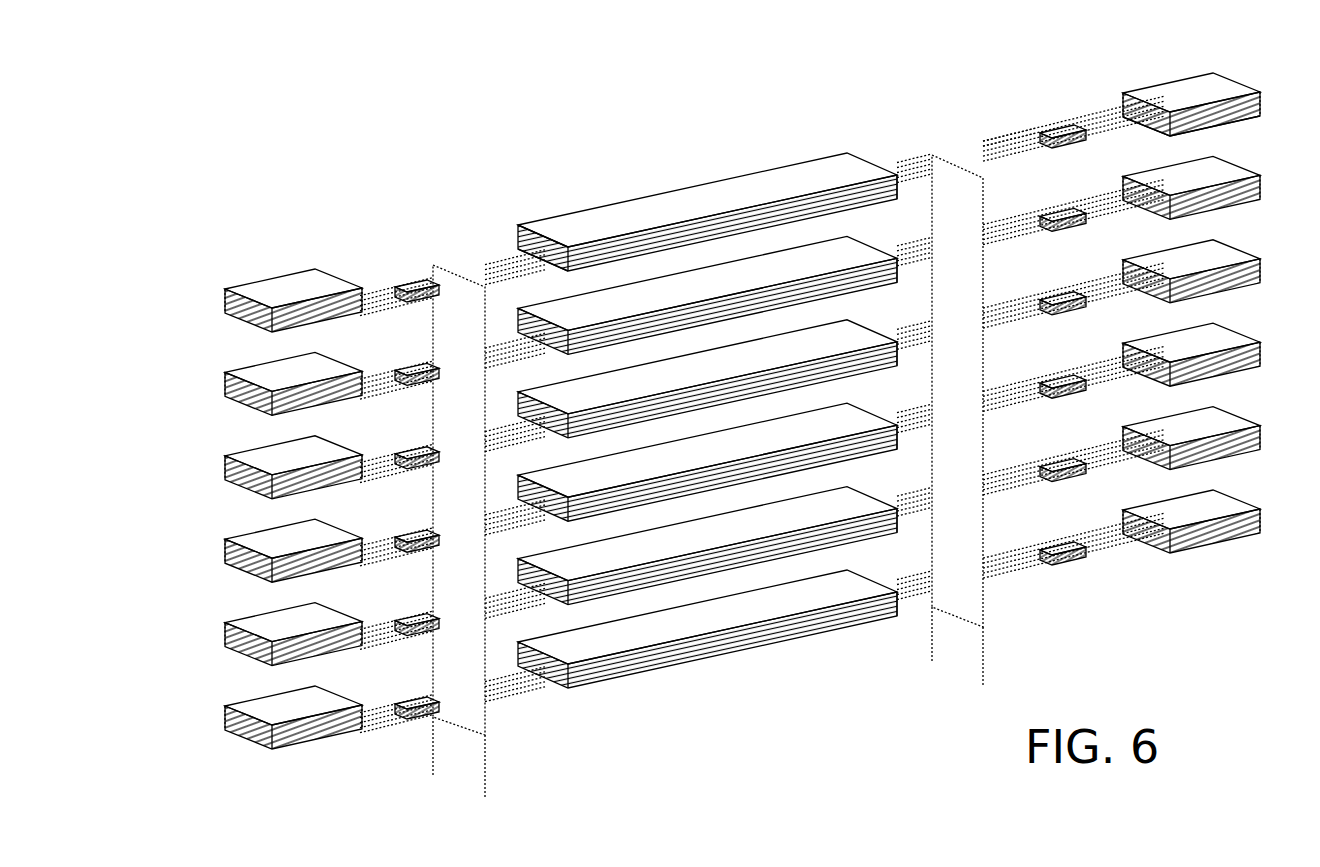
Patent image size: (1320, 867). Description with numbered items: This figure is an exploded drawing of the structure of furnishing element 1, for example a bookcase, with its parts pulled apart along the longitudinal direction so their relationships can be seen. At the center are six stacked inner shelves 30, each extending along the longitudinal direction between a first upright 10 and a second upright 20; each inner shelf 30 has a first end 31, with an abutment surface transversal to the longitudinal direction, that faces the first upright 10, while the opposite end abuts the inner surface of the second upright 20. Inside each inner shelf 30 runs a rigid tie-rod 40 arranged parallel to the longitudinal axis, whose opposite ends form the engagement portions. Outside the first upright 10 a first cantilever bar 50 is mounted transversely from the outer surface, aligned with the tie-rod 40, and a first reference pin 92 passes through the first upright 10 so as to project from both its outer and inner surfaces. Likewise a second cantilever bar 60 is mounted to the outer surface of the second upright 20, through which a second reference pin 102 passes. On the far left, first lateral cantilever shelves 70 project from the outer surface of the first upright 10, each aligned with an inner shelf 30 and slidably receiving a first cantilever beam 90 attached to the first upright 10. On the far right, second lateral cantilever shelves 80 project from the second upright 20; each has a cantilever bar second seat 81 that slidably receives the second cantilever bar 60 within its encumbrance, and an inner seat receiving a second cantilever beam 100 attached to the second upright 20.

The structure of furnishing element 1 is at (578, 168).
The first upright 10 is at (455, 325).
The second upright 20 is at (960, 206).
The inner shelf 30 is at (752, 165).
The first end 31 is at (512, 244).
The rigid tie-rod 40 is at (545, 264).
The first cantilever bar 50 is at (398, 288).
The second cantilever bar 60 is at (1063, 140).
The first lateral cantilever shelf 70 is at (298, 250).
The second lateral cantilever shelf 80 is at (1173, 72).
The cantilever bar second seat 81 is at (1132, 128).
The first cantilever beam 90 is at (397, 300).
The first reference pin 92 is at (433, 282).
The second cantilever beam 100 is at (1047, 156).
The second reference pin 102 is at (1027, 147).